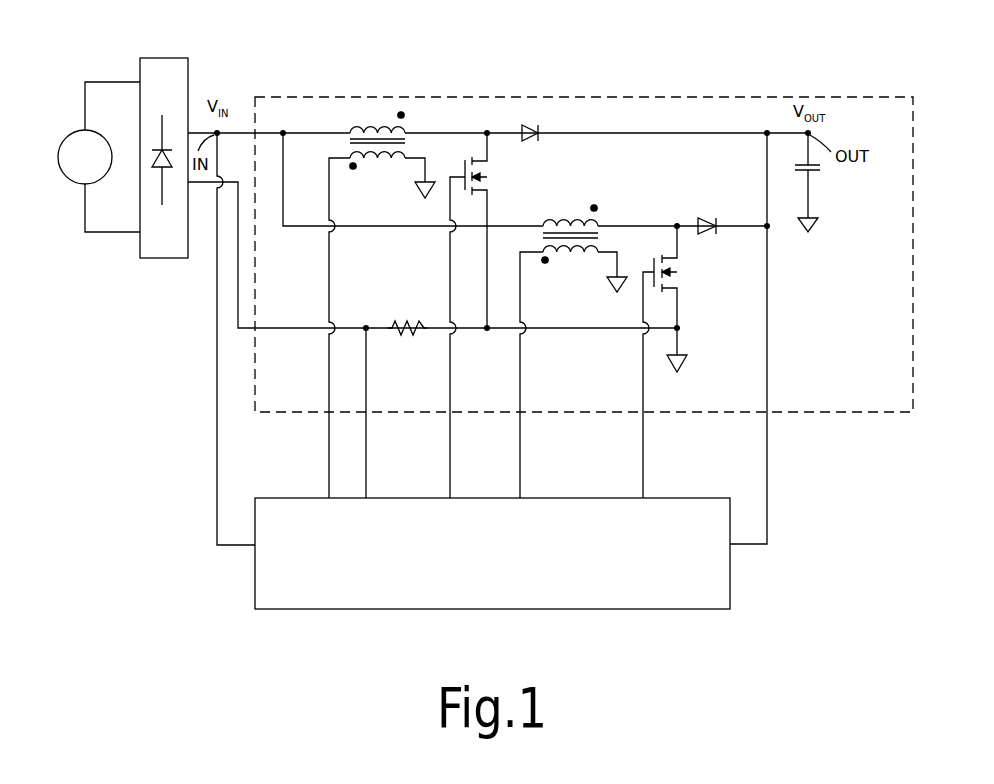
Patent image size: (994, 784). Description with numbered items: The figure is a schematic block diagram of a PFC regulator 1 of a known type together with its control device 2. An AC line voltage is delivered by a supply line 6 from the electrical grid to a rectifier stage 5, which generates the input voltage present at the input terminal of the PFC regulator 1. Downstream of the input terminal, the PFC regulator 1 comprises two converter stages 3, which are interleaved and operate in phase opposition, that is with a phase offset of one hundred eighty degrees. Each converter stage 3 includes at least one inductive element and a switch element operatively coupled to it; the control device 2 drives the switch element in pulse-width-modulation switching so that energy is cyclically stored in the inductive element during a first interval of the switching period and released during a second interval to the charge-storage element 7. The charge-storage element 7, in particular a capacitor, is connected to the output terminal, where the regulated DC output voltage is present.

The PFC regulator 1 is at (735, 82).
The control device 2 is at (728, 590).
The converter stage 3 is at (480, 174).
The rectifier stage 5 is at (188, 70).
The supply line 6 is at (77, 133).
The charge-storage element 7 is at (812, 171).